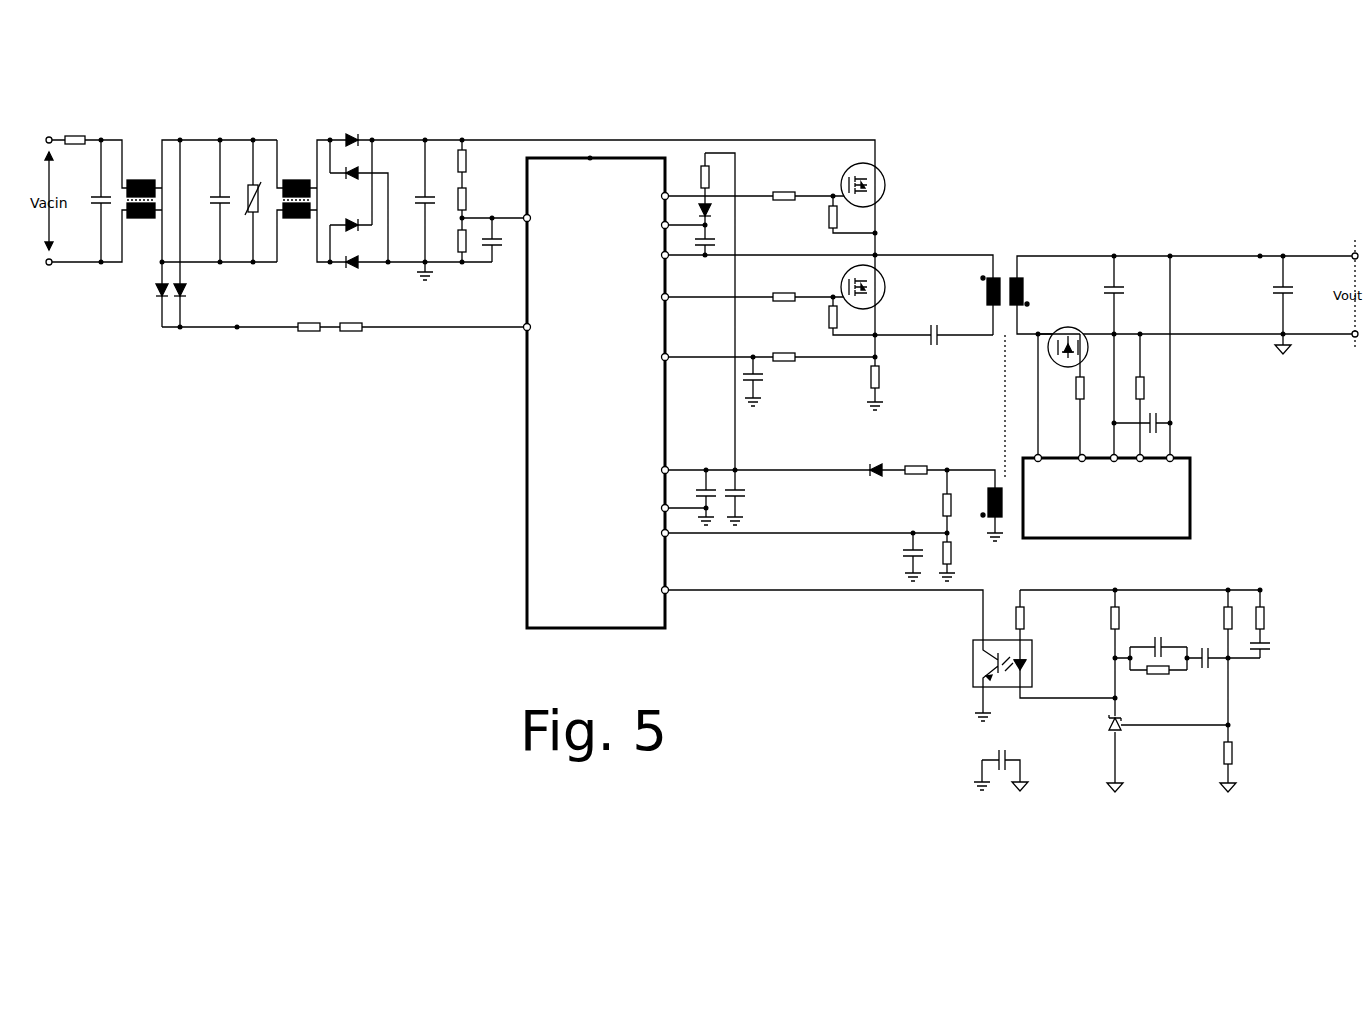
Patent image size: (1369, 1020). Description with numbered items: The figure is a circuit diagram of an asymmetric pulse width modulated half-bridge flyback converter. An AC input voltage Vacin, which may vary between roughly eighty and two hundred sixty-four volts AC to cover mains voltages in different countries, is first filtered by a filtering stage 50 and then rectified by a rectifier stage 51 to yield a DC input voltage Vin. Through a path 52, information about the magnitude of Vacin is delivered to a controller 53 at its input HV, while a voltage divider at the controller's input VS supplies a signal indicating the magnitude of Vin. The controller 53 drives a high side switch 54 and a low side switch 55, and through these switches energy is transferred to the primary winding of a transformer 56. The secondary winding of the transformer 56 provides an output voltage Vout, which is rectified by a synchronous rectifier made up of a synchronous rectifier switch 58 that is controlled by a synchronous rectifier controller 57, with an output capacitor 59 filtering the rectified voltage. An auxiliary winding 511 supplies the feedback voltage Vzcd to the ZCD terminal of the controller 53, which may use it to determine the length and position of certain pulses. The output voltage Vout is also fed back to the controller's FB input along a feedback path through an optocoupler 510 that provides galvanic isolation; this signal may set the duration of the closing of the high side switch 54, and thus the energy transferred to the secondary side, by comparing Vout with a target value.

The filtering stage 50 is at (229, 121).
The rectifier stage 51 is at (357, 122).
The path 52 is at (237, 327).
The controller 53 is at (590, 158).
The high side switch 54 is at (887, 185).
The low side switch 55 is at (887, 277).
The transformer 56 is at (1003, 267).
The synchronous rectifier controller 57 is at (1188, 498).
The synchronous rectifier switch 58 is at (1065, 322).
The output capacitor 59 is at (1270, 283).
The optocoupler 510 is at (973, 661).
The auxiliary winding 511 is at (989, 483).